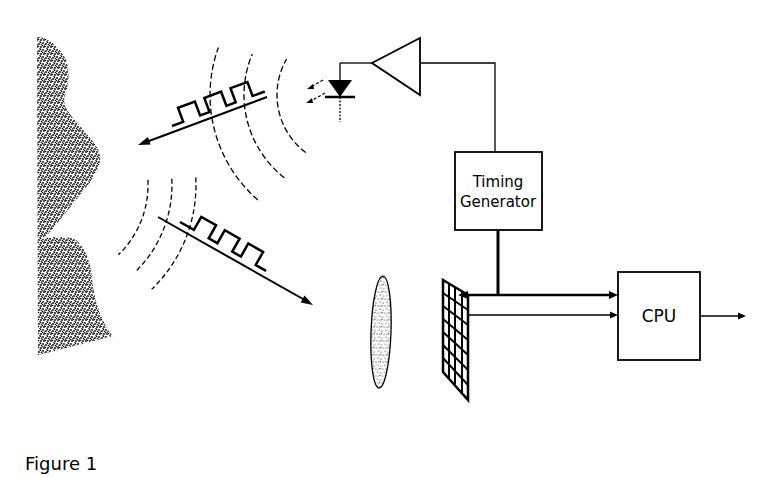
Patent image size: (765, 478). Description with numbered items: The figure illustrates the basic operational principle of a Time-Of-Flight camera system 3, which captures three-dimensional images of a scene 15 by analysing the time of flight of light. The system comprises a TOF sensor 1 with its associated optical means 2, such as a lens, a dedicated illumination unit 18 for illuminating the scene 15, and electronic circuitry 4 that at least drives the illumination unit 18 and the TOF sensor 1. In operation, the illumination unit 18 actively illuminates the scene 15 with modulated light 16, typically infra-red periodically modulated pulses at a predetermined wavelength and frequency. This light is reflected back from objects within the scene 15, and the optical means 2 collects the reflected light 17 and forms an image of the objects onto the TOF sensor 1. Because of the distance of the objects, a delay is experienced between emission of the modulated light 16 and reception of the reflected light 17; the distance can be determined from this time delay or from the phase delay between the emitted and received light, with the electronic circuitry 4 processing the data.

The TOF sensor 1 is at (470, 364).
The optical means 2 is at (373, 360).
The Time-Of-Flight camera system 3 is at (615, 150).
The electronic circuitry 4 is at (528, 278).
The scene 15 is at (67, 80).
The modulated light 16 is at (204, 108).
The reflected light 17 is at (224, 240).
The illumination unit 18 is at (332, 72).